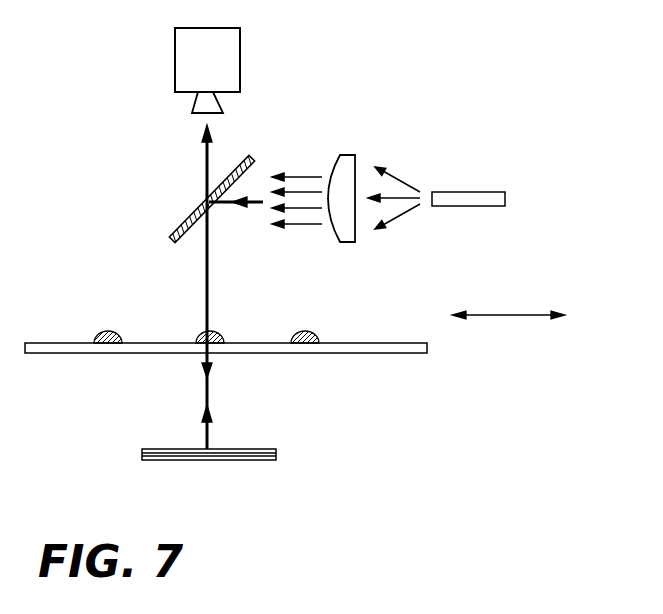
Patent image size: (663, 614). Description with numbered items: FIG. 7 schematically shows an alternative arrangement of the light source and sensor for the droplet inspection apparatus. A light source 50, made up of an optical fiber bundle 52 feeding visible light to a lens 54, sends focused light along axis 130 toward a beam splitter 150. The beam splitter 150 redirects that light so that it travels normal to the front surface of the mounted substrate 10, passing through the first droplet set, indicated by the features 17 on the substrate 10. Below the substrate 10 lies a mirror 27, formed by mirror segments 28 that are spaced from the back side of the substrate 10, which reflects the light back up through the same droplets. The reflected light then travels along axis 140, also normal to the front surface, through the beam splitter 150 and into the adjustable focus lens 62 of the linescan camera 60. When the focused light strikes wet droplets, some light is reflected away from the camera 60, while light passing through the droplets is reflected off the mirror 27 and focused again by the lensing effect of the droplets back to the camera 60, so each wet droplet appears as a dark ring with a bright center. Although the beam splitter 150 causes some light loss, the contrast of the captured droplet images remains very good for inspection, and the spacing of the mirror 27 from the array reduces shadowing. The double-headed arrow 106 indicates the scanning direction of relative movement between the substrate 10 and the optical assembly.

The linescan camera 60 is at (175, 57).
The adjustable focus lens 62 is at (202, 103).
The axis of reflected light 140 is at (203, 134).
The beam splitter 150 is at (180, 220).
The axis of light from light source 130 is at (253, 205).
The lens 54 is at (335, 162).
The light source 50 is at (418, 188).
The optical fiber bundle 52 is at (439, 170).
The scan direction 106 is at (520, 312).
The substrate 10 is at (368, 353).
The features 17 is at (293, 332).
The mirror 27 is at (162, 449).
The mirror segments 28 is at (257, 460).